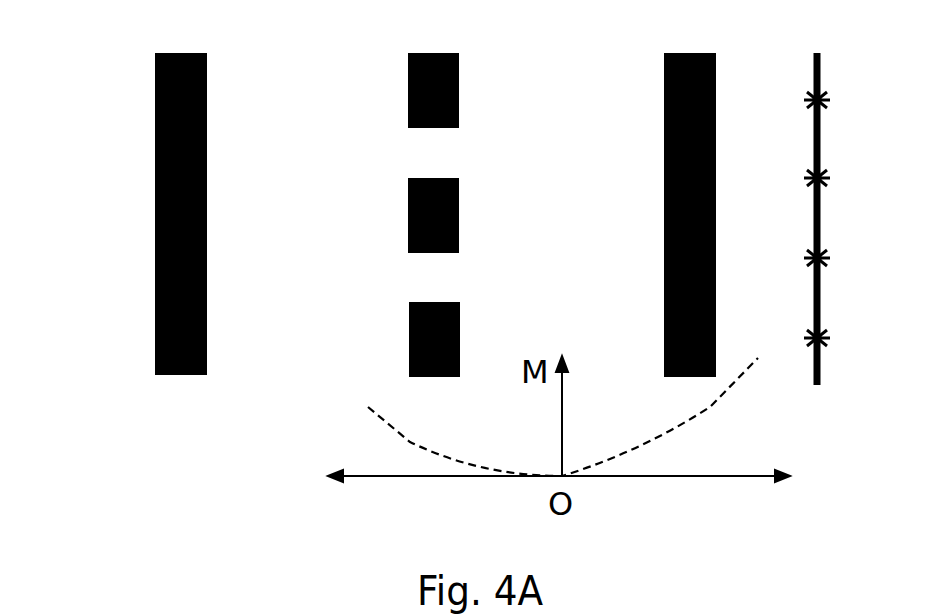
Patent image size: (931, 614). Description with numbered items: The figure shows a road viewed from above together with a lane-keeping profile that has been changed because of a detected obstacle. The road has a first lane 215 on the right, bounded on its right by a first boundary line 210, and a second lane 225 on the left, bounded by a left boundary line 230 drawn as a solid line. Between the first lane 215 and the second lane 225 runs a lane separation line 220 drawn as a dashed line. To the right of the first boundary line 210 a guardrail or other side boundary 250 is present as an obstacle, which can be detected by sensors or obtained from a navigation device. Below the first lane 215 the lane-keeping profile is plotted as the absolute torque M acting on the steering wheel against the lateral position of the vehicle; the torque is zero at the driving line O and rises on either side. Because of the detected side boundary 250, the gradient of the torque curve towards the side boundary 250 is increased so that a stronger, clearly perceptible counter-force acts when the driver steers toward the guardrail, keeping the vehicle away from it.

The left boundary line 230 is at (155, 63).
The lane separation line 220 is at (408, 73).
The second lane 225 is at (331, 179).
The first boundary line 210 is at (664, 78).
The first lane 215 is at (613, 198).
The side boundary 250 is at (813, 70).